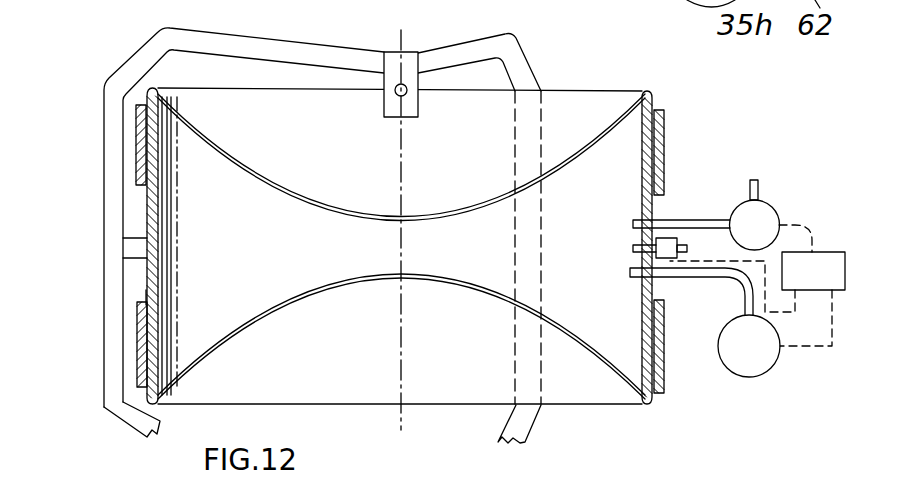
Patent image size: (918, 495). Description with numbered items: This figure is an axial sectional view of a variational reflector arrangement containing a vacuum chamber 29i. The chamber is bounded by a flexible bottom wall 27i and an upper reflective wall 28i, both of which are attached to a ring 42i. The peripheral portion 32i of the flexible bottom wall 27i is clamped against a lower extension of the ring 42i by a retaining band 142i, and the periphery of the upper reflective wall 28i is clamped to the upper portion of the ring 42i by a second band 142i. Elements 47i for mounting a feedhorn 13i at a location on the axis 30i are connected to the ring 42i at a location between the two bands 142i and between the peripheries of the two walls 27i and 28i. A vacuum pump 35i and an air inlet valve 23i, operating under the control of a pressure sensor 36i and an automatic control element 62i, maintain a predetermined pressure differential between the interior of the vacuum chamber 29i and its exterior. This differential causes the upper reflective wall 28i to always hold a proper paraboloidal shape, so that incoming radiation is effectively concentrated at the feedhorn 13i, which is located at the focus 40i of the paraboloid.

The feedhorn 13i is at (368, 27).
The elements for mounting the feedhorn 47i is at (148, 42).
The focus 40i is at (405, 94).
The axis 30i is at (403, 174).
The upper reflective wall 28i is at (279, 186).
The flexible bottom wall 27i is at (288, 308).
The vacuum chamber 29i is at (333, 247).
The ring 42i is at (157, 218).
The retaining band 142i is at (141, 137).
The peripheral portion 32i is at (147, 297).
The air inlet valve 23i is at (667, 245).
The pressure sensor 36i is at (765, 216).
The vacuum pump 35i is at (742, 370).
The automatic control element 62i is at (836, 256).